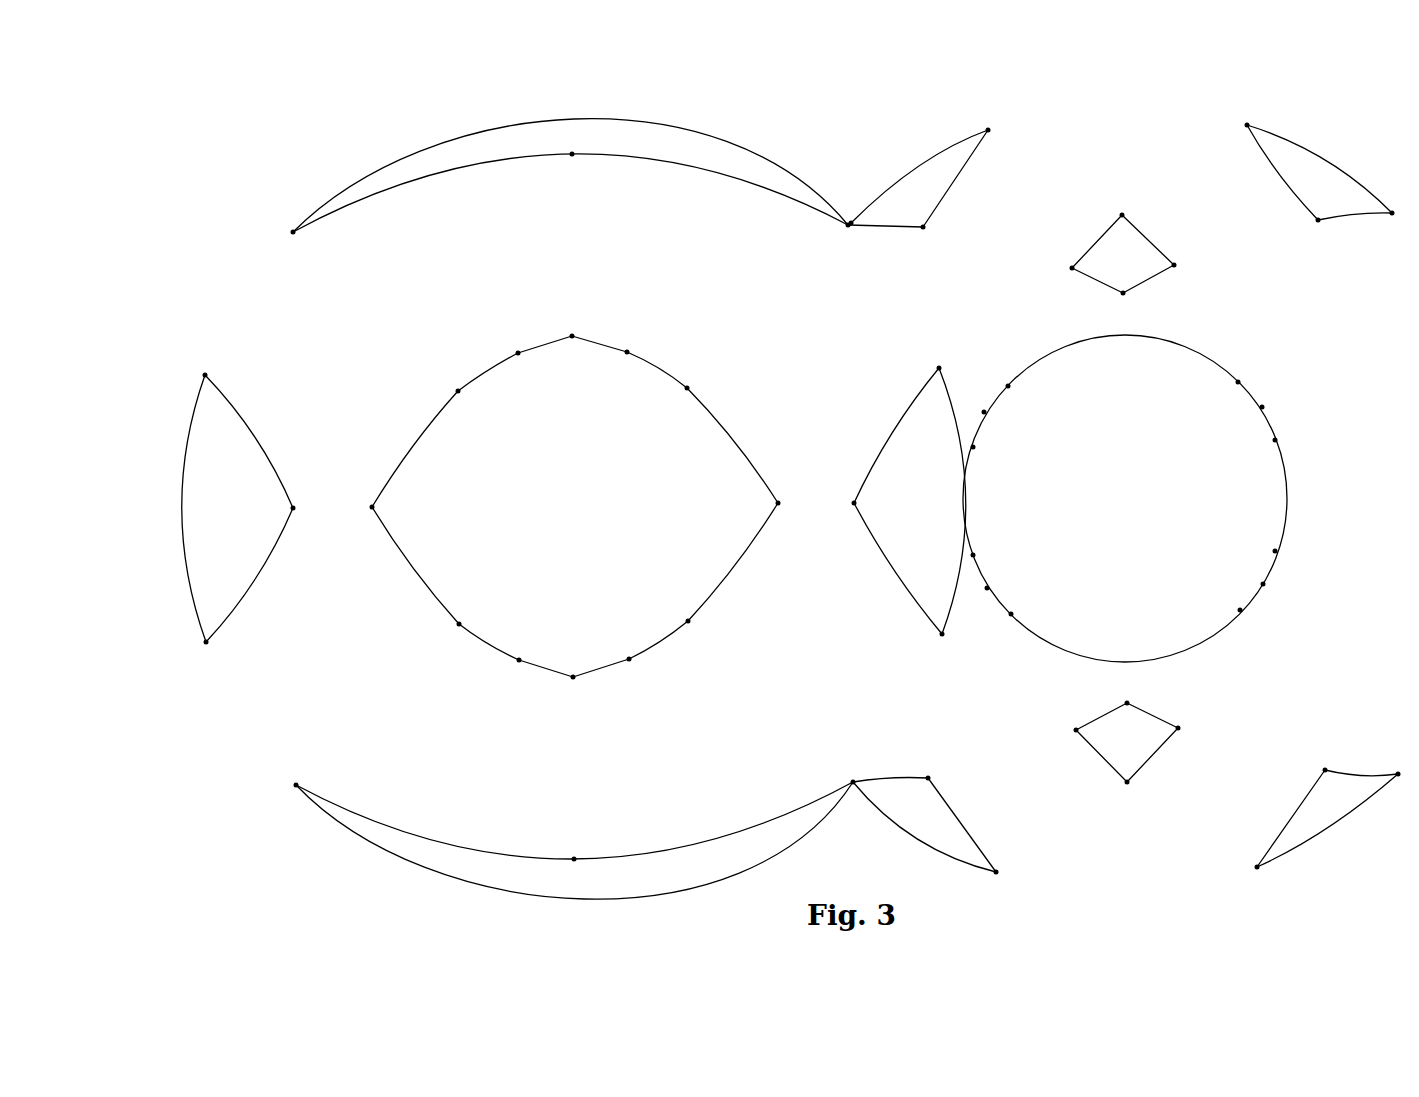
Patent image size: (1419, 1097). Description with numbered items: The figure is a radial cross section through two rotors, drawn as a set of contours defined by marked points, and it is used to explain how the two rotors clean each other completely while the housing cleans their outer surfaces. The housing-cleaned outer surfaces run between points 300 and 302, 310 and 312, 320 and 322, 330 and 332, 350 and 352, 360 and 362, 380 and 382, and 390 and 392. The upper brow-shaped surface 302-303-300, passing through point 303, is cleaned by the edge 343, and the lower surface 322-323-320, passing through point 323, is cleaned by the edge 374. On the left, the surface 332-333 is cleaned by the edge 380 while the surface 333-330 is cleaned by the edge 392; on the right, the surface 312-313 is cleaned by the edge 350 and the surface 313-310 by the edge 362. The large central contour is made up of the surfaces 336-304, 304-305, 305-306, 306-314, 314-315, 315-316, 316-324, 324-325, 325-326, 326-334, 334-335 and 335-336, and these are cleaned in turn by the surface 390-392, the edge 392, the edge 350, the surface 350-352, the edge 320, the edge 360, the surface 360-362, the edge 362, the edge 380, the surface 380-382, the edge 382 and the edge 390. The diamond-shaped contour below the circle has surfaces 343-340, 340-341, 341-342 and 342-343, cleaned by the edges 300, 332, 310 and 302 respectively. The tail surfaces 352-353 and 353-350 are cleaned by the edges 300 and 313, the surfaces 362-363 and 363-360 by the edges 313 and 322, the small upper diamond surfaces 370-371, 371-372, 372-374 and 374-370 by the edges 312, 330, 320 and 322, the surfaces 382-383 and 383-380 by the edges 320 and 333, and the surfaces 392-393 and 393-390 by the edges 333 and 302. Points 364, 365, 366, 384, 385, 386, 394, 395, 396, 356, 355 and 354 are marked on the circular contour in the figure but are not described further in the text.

The edge 300 is at (292, 246).
The edge 302 is at (848, 241).
The surface point 303 is at (571, 173).
The surface point 304 is at (512, 342).
The surface point 305 is at (571, 320).
The surface point 306 is at (627, 335).
The edge 310 is at (940, 357).
The edge 312 is at (940, 650).
The edge 313 is at (878, 505).
The surface point 314 is at (705, 378).
The surface point 315 is at (800, 503).
The surface point 316 is at (709, 633).
The edge 320 is at (852, 765).
The edge 322 is at (294, 771).
The surface point 323 is at (574, 845).
The surface point 324 is at (631, 677).
The surface point 325 is at (574, 692).
The surface point 326 is at (511, 680).
The edge 330 is at (207, 661).
The edge 332 is at (205, 361).
The edge 333 is at (266, 508).
The surface point 334 is at (450, 638).
The surface point 335 is at (349, 508).
The surface point 336 is at (438, 377).
The surface point 340 is at (1199, 730).
The surface point 341 is at (1127, 800).
The surface point 342 is at (1052, 730).
The edge 343 is at (1127, 691).
The edge 350 is at (1020, 876).
The surface point 352 is at (918, 827).
The surface point 353 is at (929, 764).
The eye outline control point 354 is at (1028, 605).
The eye outline control point 355 is at (1005, 579).
The eye outline control point 356 is at (989, 546).
The edge 360 is at (843, 202).
The edge 362 is at (993, 114).
The surface point 363 is at (928, 243).
The eye outline control point 364 is at (993, 450).
The eye outline control point 365 is at (1004, 421).
The eye outline control point 366 is at (1030, 393).
The surface point 370 is at (1047, 270).
The surface point 371 is at (1121, 201).
The surface point 372 is at (1192, 265).
The edge 374 is at (1121, 304).
The edge 380 is at (1224, 121).
The edge 382 is at (1400, 234).
The surface point 383 is at (1306, 238).
The eye outline control point 384 is at (1214, 388).
The eye outline control point 385 is at (1238, 413).
The eye outline control point 386 is at (1250, 449).
The edge 390 is at (1392, 755).
The edge 392 is at (1233, 877).
The surface point 393 is at (1314, 755).
The eye outline control point 394 is at (1255, 539).
The eye outline control point 395 is at (1243, 572).
The eye outline control point 396 is at (1217, 603).